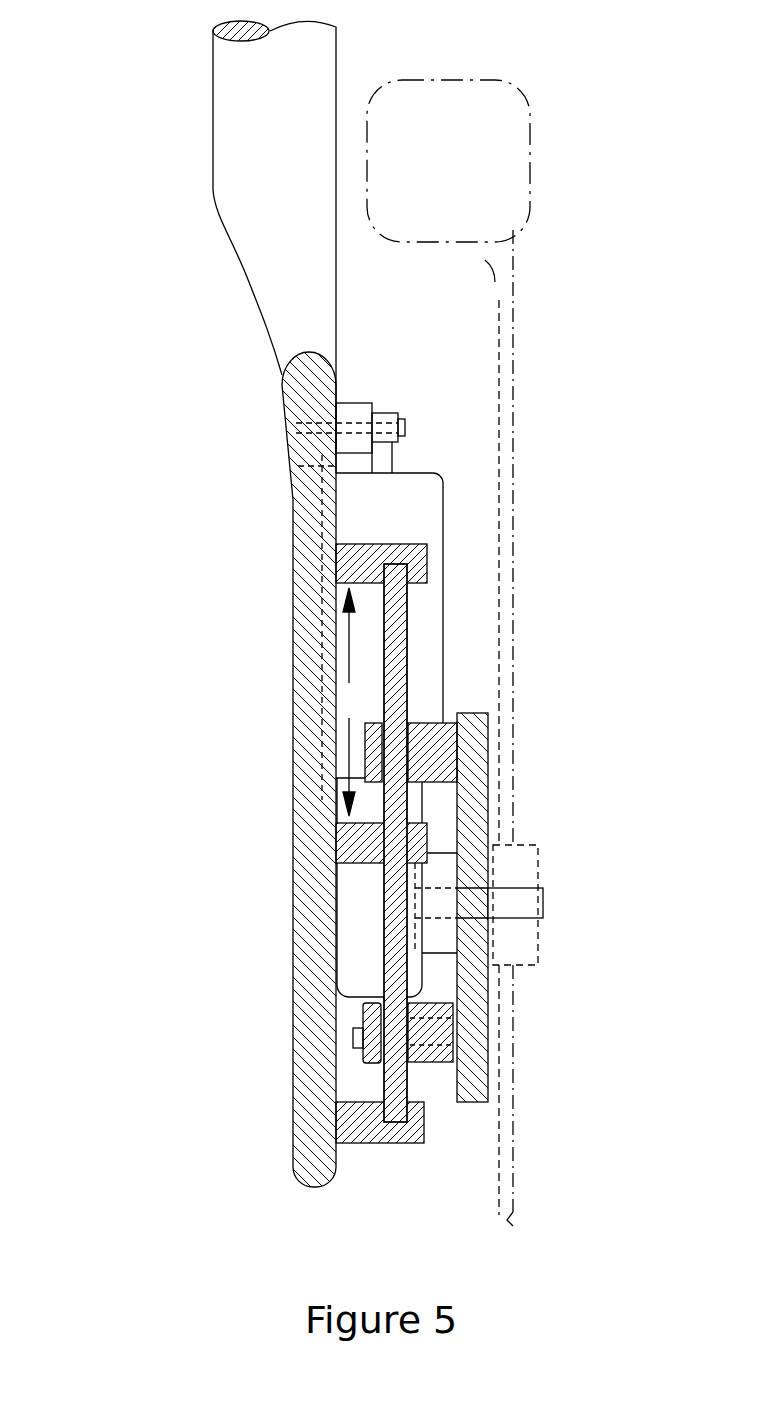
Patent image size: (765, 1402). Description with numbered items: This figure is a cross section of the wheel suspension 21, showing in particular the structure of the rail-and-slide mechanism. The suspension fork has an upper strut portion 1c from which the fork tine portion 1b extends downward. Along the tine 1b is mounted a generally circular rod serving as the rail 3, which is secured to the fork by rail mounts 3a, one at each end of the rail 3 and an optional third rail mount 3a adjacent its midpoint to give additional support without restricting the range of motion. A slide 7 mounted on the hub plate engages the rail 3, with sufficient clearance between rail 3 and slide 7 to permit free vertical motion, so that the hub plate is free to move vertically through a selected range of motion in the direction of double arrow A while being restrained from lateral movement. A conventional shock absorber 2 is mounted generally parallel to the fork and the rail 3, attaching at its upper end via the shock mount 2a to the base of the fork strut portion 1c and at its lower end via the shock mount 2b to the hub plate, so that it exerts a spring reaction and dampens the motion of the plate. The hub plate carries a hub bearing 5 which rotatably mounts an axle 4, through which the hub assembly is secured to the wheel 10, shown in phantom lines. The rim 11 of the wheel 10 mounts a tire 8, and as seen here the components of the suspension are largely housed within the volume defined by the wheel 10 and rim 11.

The right fork tine portion 1b is at (293, 713).
The upper strut portion 1c is at (223, 220).
The wheel suspension embodiment 21 is at (190, 366).
The shock absorber 2 is at (382, 523).
The upper shock mount 2a is at (372, 413).
The lower shock mount 2b is at (363, 1058).
The rail 3 is at (407, 662).
The rail mount 3a is at (387, 544).
The slide 7 is at (420, 723).
The hub bearing 5 is at (448, 946).
The axle 4 is at (543, 903).
The tire 8 is at (457, 131).
The wheel 10 is at (513, 733).
The rim 11 is at (522, 226).